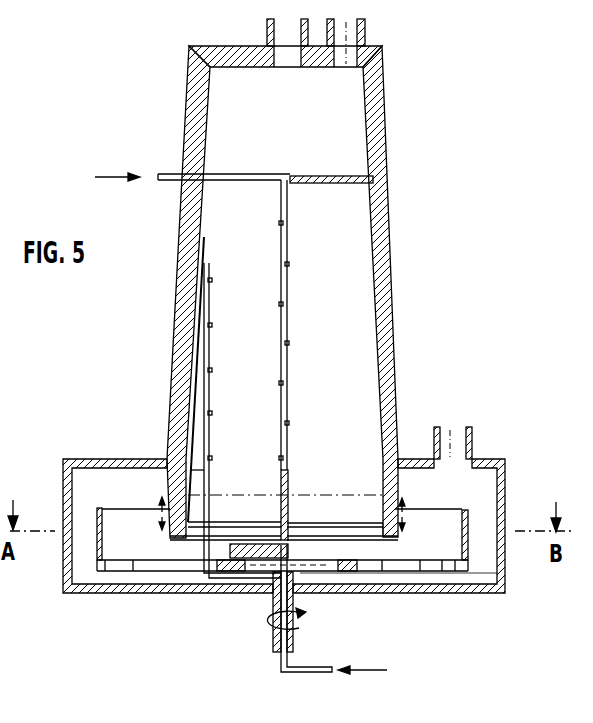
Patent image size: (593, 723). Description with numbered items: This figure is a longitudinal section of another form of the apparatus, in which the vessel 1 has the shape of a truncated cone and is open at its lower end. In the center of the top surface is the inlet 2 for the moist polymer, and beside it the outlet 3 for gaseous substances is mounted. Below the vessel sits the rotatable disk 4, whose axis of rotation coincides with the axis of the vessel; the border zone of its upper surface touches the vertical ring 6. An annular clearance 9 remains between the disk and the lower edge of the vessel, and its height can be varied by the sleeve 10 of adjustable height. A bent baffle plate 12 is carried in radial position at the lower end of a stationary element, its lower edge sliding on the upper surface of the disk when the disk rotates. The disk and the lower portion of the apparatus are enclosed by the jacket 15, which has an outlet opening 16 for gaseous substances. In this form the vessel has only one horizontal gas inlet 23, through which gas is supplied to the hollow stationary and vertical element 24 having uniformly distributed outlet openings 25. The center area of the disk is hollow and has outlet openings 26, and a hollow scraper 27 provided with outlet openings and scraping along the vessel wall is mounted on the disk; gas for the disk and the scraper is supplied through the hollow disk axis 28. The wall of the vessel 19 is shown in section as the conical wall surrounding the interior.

The vessel 1 is at (210, 47).
The inlet 2 is at (267, 38).
The outlet 3 is at (365, 38).
The rotatable disk 4 is at (452, 568).
The vertical ring 6 is at (97, 539).
The annular clearance 9 is at (392, 546).
The sleeve 10 is at (160, 502).
The bent baffle plate 12 is at (237, 573).
The jacket 15 is at (68, 471).
The outlet opening 16 is at (447, 426).
The conical wall 19 is at (385, 297).
The horizontal gas inlet 23 is at (170, 173).
The hollow stationary vertical element 24 is at (287, 236).
The outlet openings 25 is at (290, 342).
The outlet openings 26 is at (340, 556).
The hollow scraper 27 is at (203, 348).
The hollow disk axis 28 is at (293, 638).